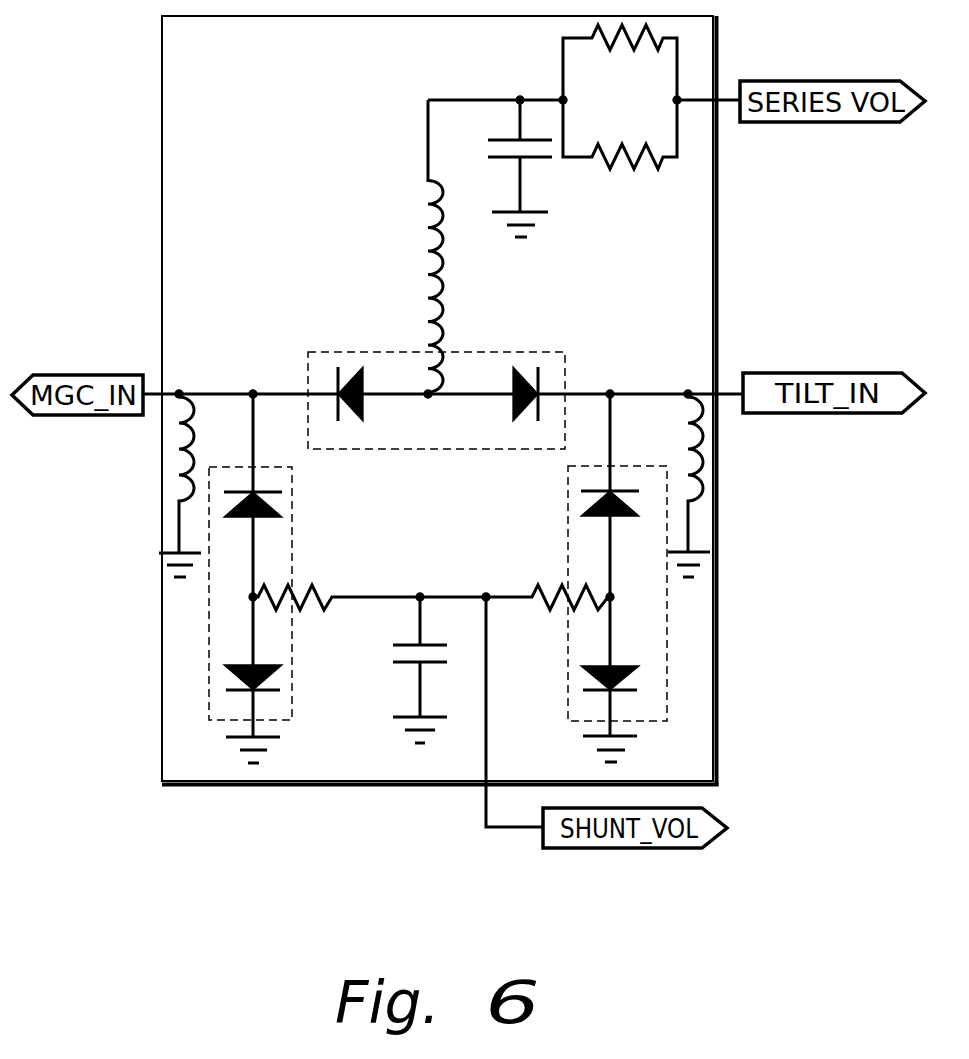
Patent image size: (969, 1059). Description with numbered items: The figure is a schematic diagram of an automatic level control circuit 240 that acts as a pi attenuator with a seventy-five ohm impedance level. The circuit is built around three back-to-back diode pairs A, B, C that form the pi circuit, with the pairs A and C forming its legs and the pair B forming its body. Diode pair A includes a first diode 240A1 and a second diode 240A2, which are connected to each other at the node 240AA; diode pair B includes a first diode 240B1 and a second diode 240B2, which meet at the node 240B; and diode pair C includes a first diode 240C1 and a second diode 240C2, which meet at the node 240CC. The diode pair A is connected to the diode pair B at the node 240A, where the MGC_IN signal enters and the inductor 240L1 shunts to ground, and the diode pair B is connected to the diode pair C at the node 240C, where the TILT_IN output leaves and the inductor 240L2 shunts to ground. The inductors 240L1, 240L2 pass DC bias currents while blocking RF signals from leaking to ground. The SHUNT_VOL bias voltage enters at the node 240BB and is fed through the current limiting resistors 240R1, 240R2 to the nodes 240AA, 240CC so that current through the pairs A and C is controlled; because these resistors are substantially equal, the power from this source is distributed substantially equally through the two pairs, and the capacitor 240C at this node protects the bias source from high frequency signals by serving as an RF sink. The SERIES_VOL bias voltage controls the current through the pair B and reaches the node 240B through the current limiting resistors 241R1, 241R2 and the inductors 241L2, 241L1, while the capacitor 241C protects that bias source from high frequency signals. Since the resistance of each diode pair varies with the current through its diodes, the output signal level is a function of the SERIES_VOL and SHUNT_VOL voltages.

The automatic level control circuit 240 is at (717, 198).
The circuit node 240A is at (270, 378).
The circuit node 240AA is at (256, 593).
The first diode 240A1 is at (277, 512).
The second diode 240A2 is at (280, 665).
The circuit node 240B is at (428, 396).
The first diode 240B1 is at (378, 350).
The second diode 240B2 is at (533, 350).
The circuit node 240BB is at (486, 596).
The circuit node / capacitor 240C is at (450, 664).
The first diode 240C1 is at (585, 513).
The second diode 240C2 is at (590, 677).
The circuit node 240CC is at (612, 596).
The current limiting resistor 240R1 is at (335, 618).
The current limiting resistor 240R2 is at (540, 606).
The inductor 240L1 is at (178, 480).
The inductor 240L2 is at (703, 490).
The current limiting resistor 241R1 is at (597, 52).
The current limiting resistor 241R2 is at (648, 170).
The capacitor 241C is at (548, 160).
The inductor 241L1 is at (443, 306).
The inductor 241L2 is at (443, 264).
The diode pair A is at (292, 560).
The diode pair B is at (430, 449).
The diode pair C is at (568, 552).